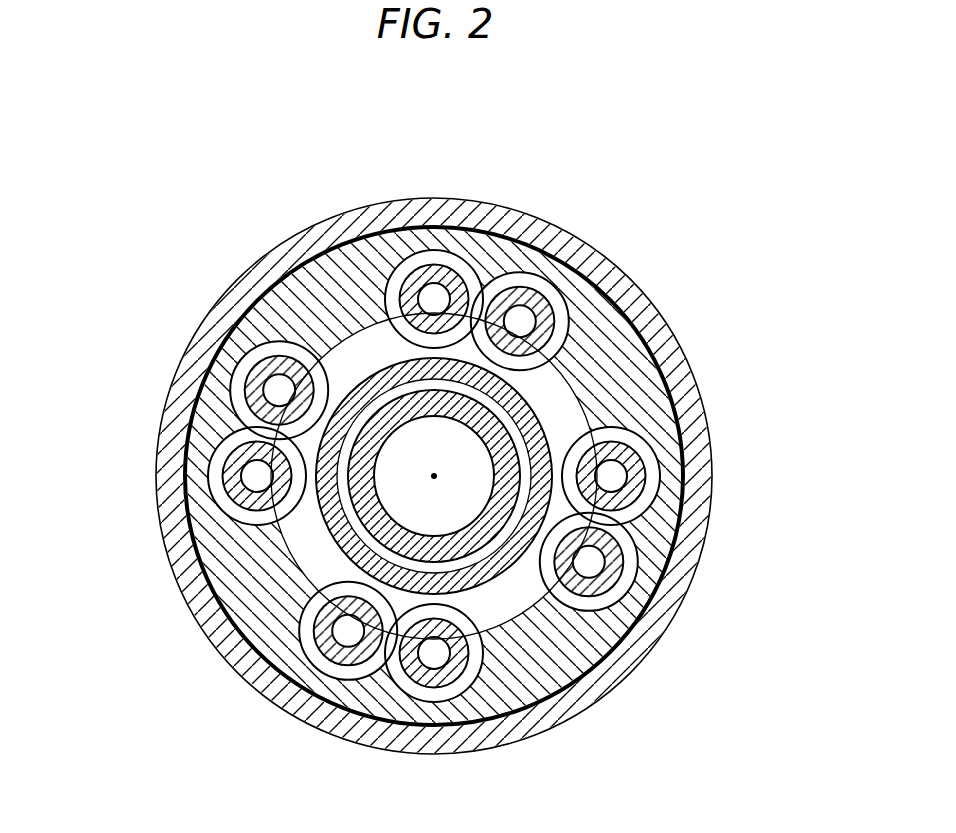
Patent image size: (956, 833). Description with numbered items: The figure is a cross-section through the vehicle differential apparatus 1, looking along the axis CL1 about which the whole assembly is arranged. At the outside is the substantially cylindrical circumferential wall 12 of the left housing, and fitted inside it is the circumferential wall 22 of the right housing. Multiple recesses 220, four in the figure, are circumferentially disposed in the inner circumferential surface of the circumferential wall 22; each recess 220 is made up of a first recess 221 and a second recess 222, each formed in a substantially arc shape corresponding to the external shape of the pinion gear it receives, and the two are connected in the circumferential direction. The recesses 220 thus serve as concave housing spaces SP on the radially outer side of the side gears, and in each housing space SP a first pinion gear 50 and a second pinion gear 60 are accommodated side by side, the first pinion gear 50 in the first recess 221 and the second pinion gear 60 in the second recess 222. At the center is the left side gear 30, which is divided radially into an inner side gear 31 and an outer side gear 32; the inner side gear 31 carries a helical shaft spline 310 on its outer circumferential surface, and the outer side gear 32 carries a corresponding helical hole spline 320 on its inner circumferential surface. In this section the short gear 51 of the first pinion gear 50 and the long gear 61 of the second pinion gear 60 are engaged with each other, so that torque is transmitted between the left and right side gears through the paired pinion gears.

The vehicle differential apparatus 1 is at (432, 455).
The circumferential wall 12 is at (682, 343).
The circumferential wall 22 is at (645, 397).
The housing space SP is at (525, 283).
The left side gear 30 is at (391, 544).
The inner side gear 31 is at (350, 498).
The outer side gear 32 is at (345, 537).
The shaft spline 310 is at (487, 550).
The hole spline 320 is at (434, 476).
The axis CL1 is at (434, 491).
The recess 220 is at (474, 243).
The first recess 221 is at (492, 277).
The second recess 222 is at (419, 252).
The first pinion gear 50 is at (441, 509).
The short gear 51 is at (298, 636).
The second pinion gear 60 is at (434, 500).
The long gear 61 is at (478, 682).